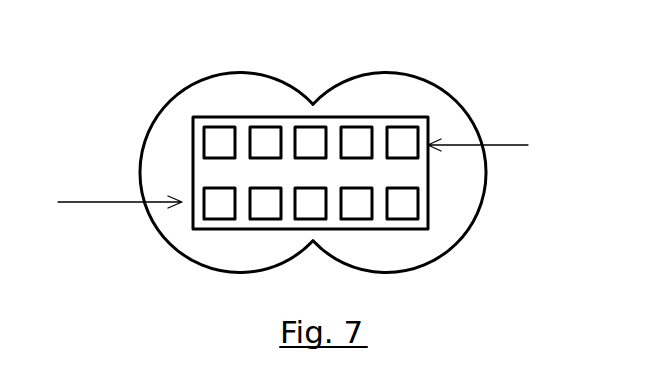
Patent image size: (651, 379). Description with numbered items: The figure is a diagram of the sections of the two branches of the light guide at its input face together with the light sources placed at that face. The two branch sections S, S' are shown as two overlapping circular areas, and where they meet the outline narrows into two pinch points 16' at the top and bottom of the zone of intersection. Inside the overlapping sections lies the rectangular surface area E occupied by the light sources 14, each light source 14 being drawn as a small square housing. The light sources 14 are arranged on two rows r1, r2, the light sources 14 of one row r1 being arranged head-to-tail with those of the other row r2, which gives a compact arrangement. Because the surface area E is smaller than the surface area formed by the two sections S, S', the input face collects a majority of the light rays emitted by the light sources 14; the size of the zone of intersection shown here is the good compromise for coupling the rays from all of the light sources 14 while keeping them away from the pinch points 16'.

The light source 14 is at (257, 138).
The pinch point 16' is at (379, 155).
The surface area E is at (381, 117).
The section S is at (435, 154).
The section S' is at (199, 165).
The row r1 is at (498, 146).
The row r2 is at (104, 203).